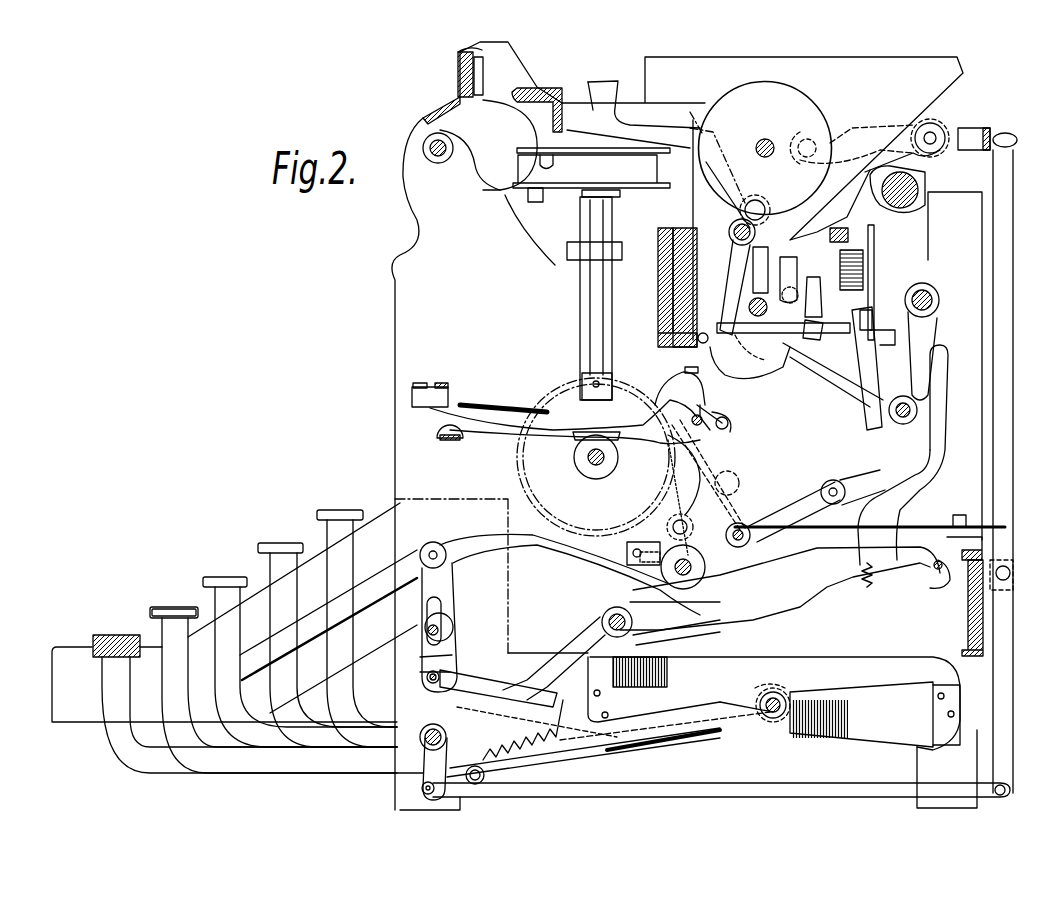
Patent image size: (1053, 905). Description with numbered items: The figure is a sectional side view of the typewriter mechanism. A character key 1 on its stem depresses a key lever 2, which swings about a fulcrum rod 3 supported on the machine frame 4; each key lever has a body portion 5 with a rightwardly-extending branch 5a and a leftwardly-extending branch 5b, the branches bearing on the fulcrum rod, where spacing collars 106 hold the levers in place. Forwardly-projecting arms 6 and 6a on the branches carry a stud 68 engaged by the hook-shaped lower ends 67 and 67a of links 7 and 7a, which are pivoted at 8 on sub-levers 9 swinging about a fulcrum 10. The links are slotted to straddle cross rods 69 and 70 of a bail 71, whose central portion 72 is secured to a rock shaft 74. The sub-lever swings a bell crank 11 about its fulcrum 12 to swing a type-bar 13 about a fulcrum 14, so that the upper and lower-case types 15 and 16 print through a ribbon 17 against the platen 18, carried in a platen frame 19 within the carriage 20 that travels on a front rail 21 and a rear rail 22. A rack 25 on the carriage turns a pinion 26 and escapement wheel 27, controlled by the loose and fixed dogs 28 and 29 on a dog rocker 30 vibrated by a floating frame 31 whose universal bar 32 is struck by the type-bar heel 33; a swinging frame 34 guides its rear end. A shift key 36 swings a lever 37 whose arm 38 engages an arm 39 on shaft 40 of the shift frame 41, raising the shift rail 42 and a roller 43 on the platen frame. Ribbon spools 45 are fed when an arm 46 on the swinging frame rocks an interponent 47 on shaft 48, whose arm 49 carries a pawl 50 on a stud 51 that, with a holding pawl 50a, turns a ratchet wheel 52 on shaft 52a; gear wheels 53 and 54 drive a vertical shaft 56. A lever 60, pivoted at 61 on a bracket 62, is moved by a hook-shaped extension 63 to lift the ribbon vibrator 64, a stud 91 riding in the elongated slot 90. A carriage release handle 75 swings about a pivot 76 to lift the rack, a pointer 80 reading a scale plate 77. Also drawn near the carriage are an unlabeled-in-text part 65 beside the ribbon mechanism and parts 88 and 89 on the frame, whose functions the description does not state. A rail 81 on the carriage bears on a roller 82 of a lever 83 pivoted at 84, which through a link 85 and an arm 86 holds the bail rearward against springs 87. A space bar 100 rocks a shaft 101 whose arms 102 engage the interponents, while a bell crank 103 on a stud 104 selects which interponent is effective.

The character key 1 is at (310, 516).
The key lever 2 is at (615, 752).
The fulcrum rod 3 is at (483, 462).
The machine frame 4 is at (395, 500).
The intermediate or body portion 5 is at (578, 750).
The rightwardly-extending branch 5a is at (870, 735).
The leftwardly-extending branch 5b is at (665, 690).
The forwardly-projecting arm 6 is at (570, 680).
The forwardly-projecting arm 6a is at (482, 705).
The connectible link or pendant 7 is at (417, 592).
The connectible link or pendant 7a is at (449, 580).
The pivot 8 is at (433, 543).
The sub-lever 9 is at (535, 540).
The fulcrum 10 is at (932, 578).
The bell crank 11 is at (663, 542).
The fulcrum 12 is at (696, 567).
The type-bar 13 is at (505, 412).
The fulcrum 14 is at (700, 412).
The upper-case type 15 is at (418, 384).
The lower-case type 16 is at (440, 383).
The ribbon 17 is at (740, 158).
The platen 18 is at (800, 112).
The platen frame 19 is at (898, 72).
The carriage frame 20 is at (942, 124).
The front rail 21 is at (465, 108).
The rear rail 22 is at (920, 188).
The rack 25 is at (842, 228).
The pinion 26 is at (864, 268).
The escapement wheel 27 is at (874, 240).
The loose dog 28 is at (870, 315).
The fixed dog 29 is at (815, 300).
The dog rocker 30 is at (860, 400).
The floating frame 31 is at (740, 333).
The curved universal bar 32 is at (690, 366).
The heel 33 is at (660, 388).
The swinging frame 34 is at (898, 418).
The shift key 36 is at (192, 607).
The lever 37 is at (382, 572).
The upwardly-extending arm 38 is at (900, 490).
The arm 39 is at (928, 333).
The shaft 40 is at (932, 296).
The shift frame 41 is at (810, 380).
The cross bar or shift rail 42 is at (748, 306).
The roller 43 is at (735, 272).
The ribbon spool 45 is at (565, 195).
The arm 46 is at (855, 478).
The arm or interponent 47 is at (790, 510).
The shaft 48 is at (742, 545).
The arm 49 is at (722, 478).
The pawl 50 is at (675, 470).
The holding pawl 50a is at (735, 478).
The stud 51 is at (672, 520).
The ratchet wheel 52 is at (518, 455).
The horizontally-disposed shaft 52a is at (596, 466).
The gear wheel 53 is at (575, 465).
The gear wheel 54 is at (575, 436).
The vertical shaft 56 is at (583, 305).
The lever 60 is at (768, 385).
The pivot 61 is at (812, 338).
The bracket 62 is at (772, 345).
The hook-shaped extension 63 is at (703, 332).
The ribbon vibrator or guide 64 is at (694, 135).
The block 65 is at (658, 232).
The hook-shaped lower end 67 is at (425, 697).
The hook-shaped lower end 67a is at (480, 688).
The stud 68 is at (420, 675).
The cross rod 69 is at (425, 630).
The cross rod 70 is at (453, 628).
The bail 71 is at (445, 615).
The central portion 72 is at (449, 656).
The rock shaft 74 is at (420, 733).
The carriage release handle 75 is at (612, 80).
The pivot 76 is at (765, 205).
The scale plate 77 is at (458, 60).
The pointer 80 is at (460, 50).
The rail or bar 81 is at (985, 128).
The roller 82 is at (1014, 144).
The lever 83 is at (1013, 315).
The pivot 84 is at (1012, 572).
The link 85 is at (786, 783).
The arm 86 is at (418, 780).
The spring 87 is at (525, 755).
The plate 88 is at (520, 150).
The frame body 89 is at (455, 205).
The elongated slot 90 is at (768, 268).
The stud 91 is at (796, 290).
The space bar 100 is at (135, 637).
The rock shaft 101 is at (618, 608).
The arm 102 is at (805, 585).
The bell crank 103 is at (947, 540).
The stud 104 is at (960, 515).
The spacing washer or collar 106 is at (758, 690).